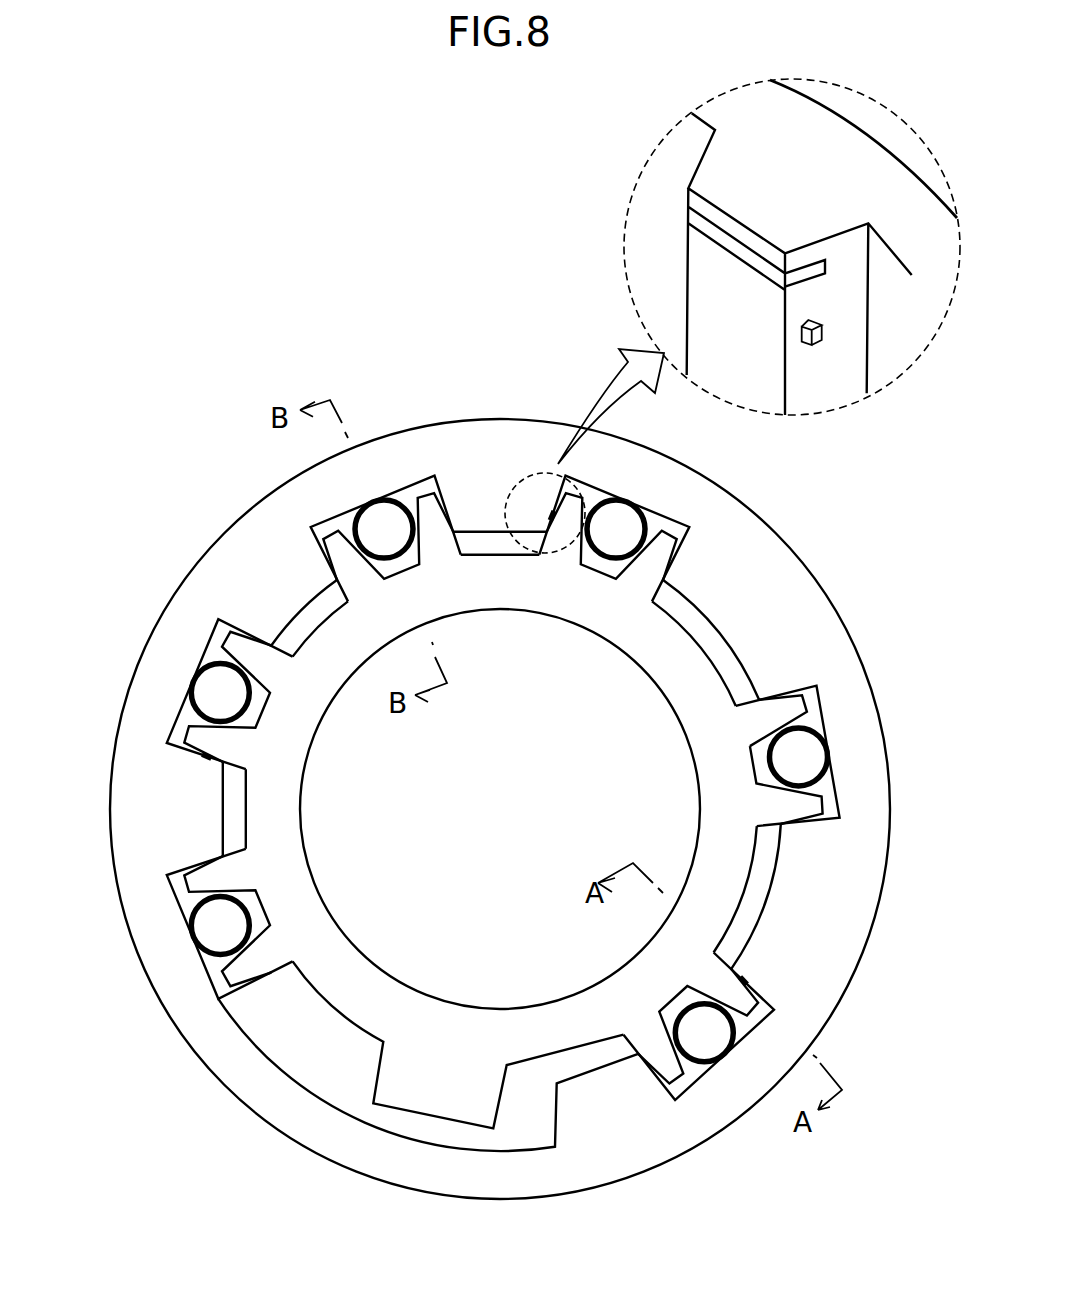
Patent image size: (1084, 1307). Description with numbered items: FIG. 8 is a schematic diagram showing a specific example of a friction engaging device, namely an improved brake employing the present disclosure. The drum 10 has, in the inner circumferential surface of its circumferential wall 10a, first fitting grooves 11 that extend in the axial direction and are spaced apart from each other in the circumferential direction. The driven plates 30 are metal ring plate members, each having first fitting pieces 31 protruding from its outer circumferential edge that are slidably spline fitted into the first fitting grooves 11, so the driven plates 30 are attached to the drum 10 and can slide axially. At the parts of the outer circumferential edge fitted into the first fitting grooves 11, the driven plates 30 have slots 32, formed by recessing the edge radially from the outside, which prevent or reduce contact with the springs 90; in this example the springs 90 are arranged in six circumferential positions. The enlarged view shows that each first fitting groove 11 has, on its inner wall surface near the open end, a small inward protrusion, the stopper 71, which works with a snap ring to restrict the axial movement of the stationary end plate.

The drum 10 is at (503, 741).
The circumferential wall 10a is at (502, 437).
The first fitting groove 11 is at (201, 651).
The driven plate 30 is at (655, 653).
The first fitting piece 31 is at (778, 708).
The slot 32 is at (810, 792).
The stopper 71 is at (822, 335).
The spring 90 is at (190, 697).